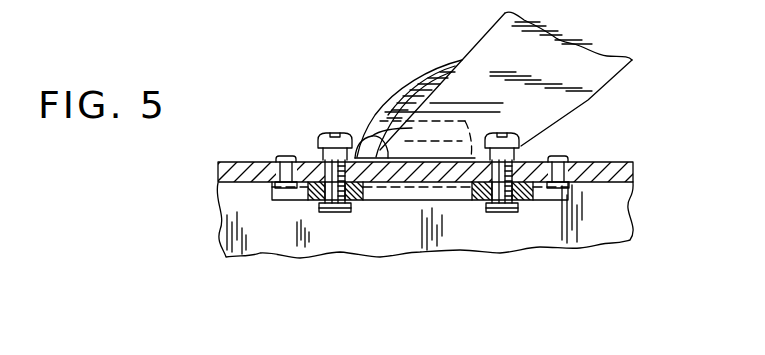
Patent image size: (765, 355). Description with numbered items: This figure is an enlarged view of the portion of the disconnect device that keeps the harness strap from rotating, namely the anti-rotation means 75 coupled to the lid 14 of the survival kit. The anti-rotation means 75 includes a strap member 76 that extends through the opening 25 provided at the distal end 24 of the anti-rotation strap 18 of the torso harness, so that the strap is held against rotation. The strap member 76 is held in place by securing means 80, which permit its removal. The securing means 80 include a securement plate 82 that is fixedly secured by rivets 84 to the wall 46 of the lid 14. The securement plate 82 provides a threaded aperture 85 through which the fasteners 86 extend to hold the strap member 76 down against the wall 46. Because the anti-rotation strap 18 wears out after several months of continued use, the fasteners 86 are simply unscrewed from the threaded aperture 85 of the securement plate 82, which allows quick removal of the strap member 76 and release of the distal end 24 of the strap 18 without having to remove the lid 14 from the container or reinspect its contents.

The lid 14 is at (377, 258).
The anti-rotation strap 18 is at (587, 46).
The distal end 24 is at (471, 50).
The opening 25 is at (402, 82).
The wall 46 is at (220, 173).
The anti-rotation means 75 is at (358, 128).
The strap member 76 is at (368, 136).
The securing means 80 is at (318, 136).
The securement plate 82 is at (278, 199).
The rivets 84 is at (284, 167).
The threaded aperture 85 is at (346, 208).
The fasteners 86 is at (323, 131).